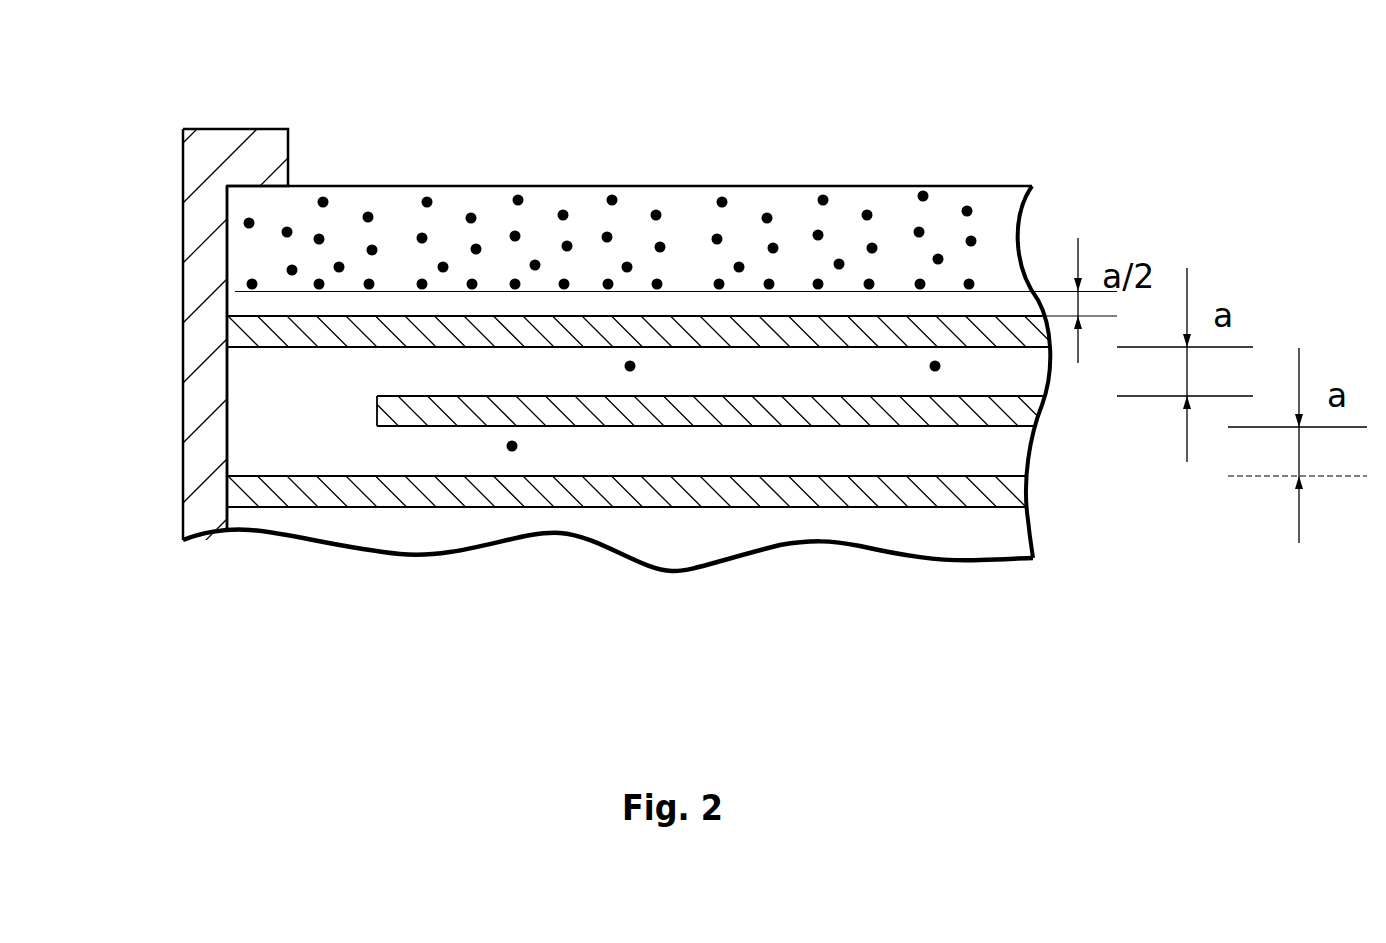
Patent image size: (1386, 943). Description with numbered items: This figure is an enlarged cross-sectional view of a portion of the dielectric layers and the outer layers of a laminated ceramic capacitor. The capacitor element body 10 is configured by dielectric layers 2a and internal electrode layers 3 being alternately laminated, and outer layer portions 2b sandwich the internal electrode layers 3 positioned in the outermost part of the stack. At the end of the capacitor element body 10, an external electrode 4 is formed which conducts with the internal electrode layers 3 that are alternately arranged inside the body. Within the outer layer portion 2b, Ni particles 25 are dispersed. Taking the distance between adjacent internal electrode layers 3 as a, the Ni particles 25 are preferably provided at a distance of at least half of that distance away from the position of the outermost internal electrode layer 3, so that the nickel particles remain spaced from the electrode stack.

The external electrode 4 is at (268, 143).
The capacitor element body 10 is at (646, 176).
The outer layer portions 2b is at (994, 220).
The dielectric layers 2a is at (415, 371).
The internal electrode layers 3 is at (923, 493).
The Ni particles 25 is at (472, 213).